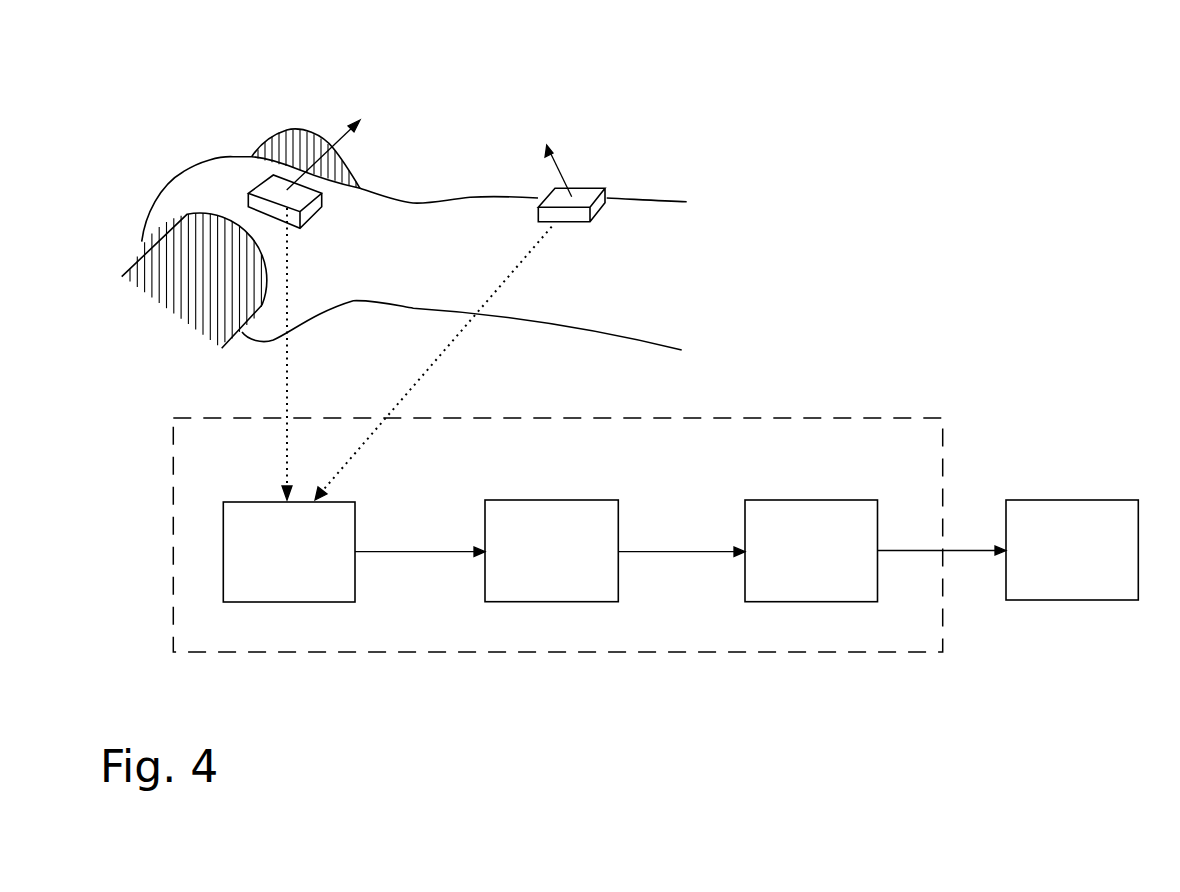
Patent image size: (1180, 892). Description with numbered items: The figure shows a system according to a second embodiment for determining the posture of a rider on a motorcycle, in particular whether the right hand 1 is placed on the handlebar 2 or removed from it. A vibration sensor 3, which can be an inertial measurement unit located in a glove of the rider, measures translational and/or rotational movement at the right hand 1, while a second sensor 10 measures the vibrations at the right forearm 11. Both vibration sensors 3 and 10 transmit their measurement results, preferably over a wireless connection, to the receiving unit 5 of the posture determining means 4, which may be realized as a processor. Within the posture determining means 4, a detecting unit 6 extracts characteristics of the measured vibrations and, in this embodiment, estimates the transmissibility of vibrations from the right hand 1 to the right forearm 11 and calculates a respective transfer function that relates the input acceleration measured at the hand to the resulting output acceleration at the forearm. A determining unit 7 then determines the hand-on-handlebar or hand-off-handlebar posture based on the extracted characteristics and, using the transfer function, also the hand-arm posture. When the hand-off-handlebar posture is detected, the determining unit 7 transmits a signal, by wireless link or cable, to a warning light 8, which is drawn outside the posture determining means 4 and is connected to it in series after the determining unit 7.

The right hand 1 is at (182, 190).
The handlebar 2 is at (288, 140).
The vibration sensor 3 is at (312, 212).
The posture determining means 4 is at (917, 415).
The receiving unit 5 is at (242, 500).
The detecting unit 6 is at (602, 500).
The determining unit 7 is at (863, 500).
The warning light 8 is at (1127, 500).
The sensor 10 is at (588, 198).
The right forearm 11 is at (533, 317).